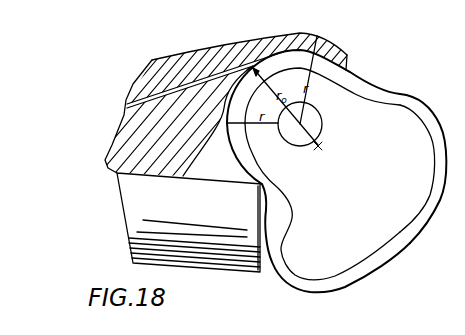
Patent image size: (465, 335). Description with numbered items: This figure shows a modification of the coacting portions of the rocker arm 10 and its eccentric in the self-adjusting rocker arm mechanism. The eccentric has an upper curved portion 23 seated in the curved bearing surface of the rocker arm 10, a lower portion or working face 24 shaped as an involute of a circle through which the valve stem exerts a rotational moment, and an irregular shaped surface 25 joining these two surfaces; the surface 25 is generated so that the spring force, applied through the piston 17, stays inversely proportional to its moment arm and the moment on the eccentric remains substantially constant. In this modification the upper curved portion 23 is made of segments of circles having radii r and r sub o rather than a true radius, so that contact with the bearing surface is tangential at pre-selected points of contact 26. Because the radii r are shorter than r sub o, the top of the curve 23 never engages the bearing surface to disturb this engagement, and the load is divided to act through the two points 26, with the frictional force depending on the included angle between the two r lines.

The rocker arm 10 is at (174, 57).
The piston 17 is at (223, 253).
The upper curved portion 23 is at (330, 72).
The lower portion or working face 24 is at (387, 252).
The irregular shaped surface 25 is at (290, 272).
The points of contact 26 is at (322, 42).